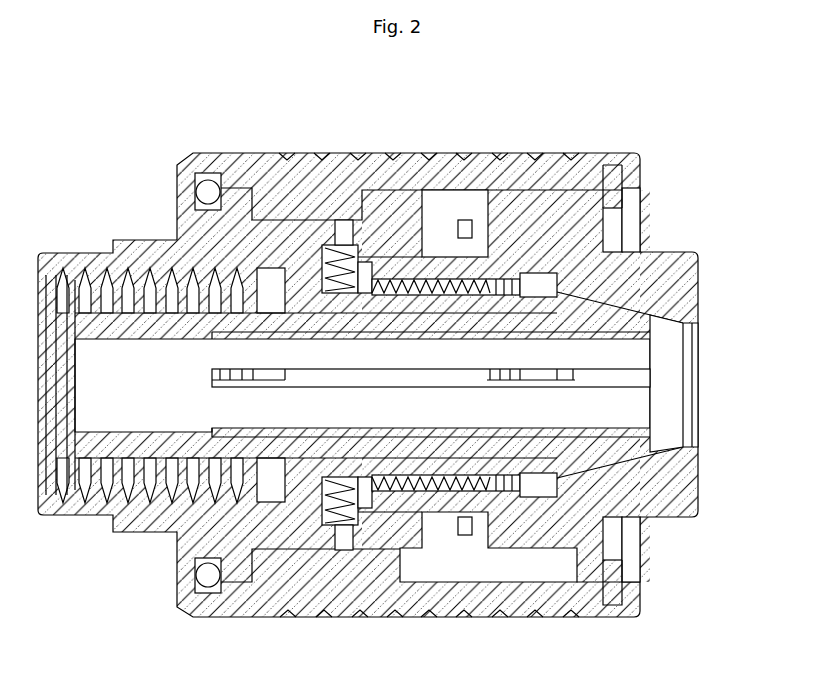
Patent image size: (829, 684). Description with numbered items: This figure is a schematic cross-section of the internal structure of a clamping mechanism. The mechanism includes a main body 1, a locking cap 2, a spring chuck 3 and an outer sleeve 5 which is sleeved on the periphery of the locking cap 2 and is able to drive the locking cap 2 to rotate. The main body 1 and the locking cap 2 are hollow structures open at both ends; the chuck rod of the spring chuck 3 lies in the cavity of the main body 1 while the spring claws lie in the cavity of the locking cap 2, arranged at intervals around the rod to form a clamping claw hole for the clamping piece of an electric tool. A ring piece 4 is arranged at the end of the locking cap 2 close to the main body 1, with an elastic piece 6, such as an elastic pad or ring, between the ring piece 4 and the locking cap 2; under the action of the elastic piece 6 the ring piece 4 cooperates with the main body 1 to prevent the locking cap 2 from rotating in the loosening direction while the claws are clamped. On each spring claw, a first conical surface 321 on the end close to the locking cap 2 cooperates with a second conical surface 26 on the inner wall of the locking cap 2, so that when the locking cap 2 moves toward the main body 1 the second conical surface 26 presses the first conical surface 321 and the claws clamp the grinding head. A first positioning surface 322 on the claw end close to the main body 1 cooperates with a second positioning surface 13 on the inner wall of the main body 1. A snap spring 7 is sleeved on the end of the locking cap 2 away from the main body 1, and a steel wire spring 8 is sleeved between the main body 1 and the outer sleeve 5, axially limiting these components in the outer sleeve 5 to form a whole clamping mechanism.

The main body 1 is at (140, 534).
The locking cap 2 is at (567, 188).
The spring chuck 3 is at (640, 404).
The ring piece 4 is at (380, 190).
The outer sleeve 5 is at (325, 617).
The elastic piece 6 is at (462, 230).
The snap spring 7 is at (620, 172).
The steel wire spring 8 is at (206, 178).
The second positioning surface 13 is at (468, 304).
The second conical surface 26 is at (650, 315).
The first conical surface 321 is at (638, 458).
The first positioning surface 322 is at (468, 470).